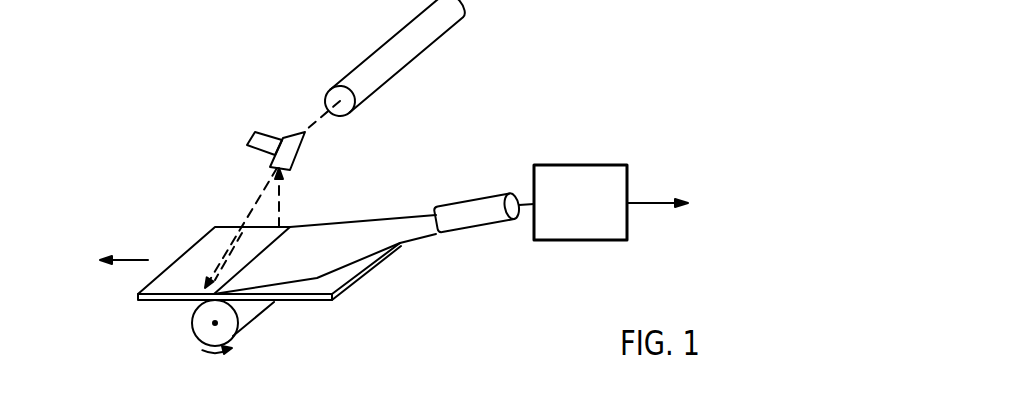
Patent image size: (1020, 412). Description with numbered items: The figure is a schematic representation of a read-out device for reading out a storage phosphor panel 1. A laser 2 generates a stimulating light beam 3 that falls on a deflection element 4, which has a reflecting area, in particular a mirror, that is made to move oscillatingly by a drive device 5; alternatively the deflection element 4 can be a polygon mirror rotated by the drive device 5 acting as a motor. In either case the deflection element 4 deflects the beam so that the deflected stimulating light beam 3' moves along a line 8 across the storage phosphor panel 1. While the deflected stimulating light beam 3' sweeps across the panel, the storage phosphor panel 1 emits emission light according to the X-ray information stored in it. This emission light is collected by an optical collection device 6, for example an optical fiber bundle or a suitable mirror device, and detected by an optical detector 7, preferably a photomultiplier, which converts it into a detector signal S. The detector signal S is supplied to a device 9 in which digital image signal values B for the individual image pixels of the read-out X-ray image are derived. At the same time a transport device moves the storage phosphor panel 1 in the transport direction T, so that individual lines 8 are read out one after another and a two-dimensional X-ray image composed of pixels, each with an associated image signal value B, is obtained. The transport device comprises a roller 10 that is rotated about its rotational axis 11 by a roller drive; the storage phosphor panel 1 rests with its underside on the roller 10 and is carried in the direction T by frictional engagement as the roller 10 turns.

The storage phosphor panel 1 is at (138, 296).
The laser 2 is at (383, 47).
The stimulating light beam 3 is at (316, 92).
The deflected stimulating light beam 3' is at (241, 228).
The deflection element 4 is at (281, 136).
The drive device 5 is at (258, 146).
The optical collection device 6 is at (350, 220).
The optical detector 7 is at (470, 205).
The line 8 is at (232, 267).
The device 9 is at (584, 214).
The roller 10 is at (248, 324).
The rotational axis 11 is at (215, 323).
The transport direction T is at (123, 258).
The detector signal S is at (528, 201).
The image signal values B is at (646, 203).